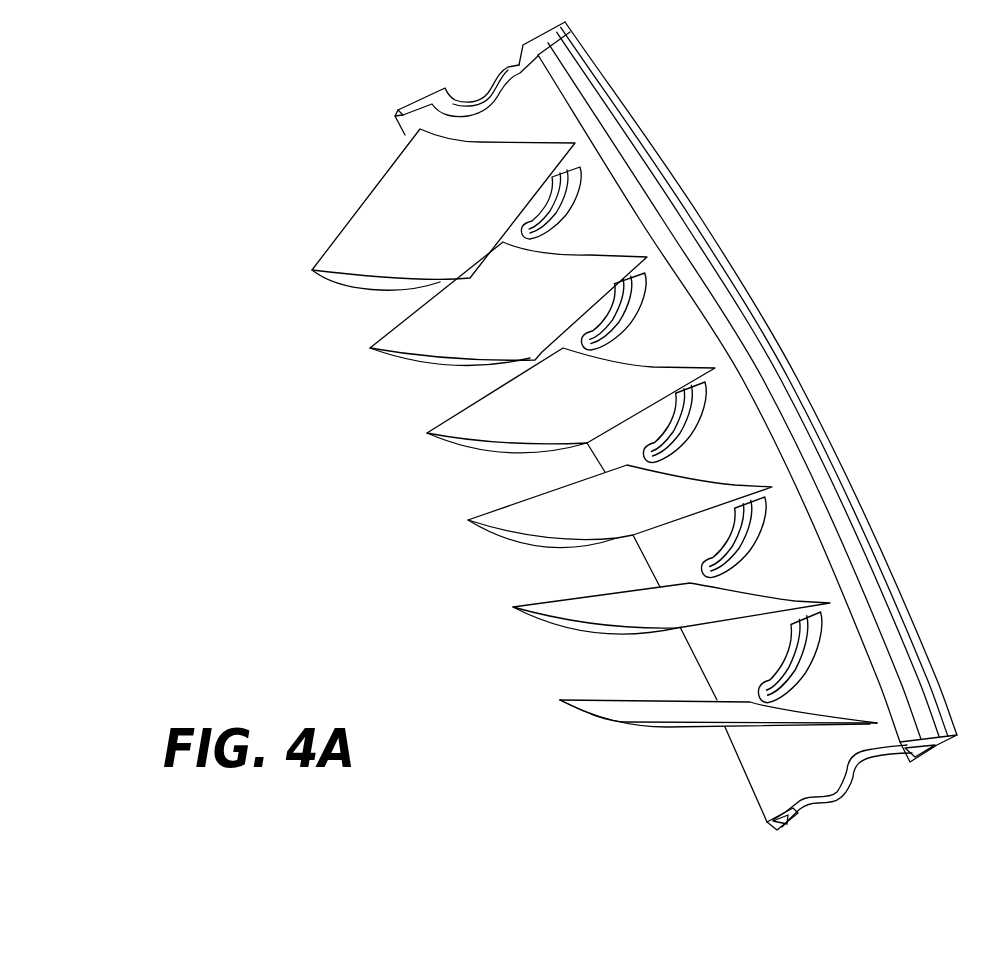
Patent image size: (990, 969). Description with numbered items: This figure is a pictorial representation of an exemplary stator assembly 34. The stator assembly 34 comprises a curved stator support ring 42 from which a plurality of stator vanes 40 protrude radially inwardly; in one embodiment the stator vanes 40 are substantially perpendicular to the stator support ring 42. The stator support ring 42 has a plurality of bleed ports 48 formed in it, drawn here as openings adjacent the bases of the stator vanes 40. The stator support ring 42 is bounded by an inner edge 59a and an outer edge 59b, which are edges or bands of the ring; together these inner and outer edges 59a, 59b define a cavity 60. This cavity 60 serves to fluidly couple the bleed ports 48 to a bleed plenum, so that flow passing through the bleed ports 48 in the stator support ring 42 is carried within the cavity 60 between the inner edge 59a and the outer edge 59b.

The stator assembly 34 is at (859, 215).
The stator vanes 40 is at (312, 270).
The stator support ring 42 is at (625, 120).
The bleed ports 48 is at (578, 193).
The inner edge 59a is at (765, 791).
The outer edge 59b is at (788, 827).
The cavity 60 is at (458, 107).